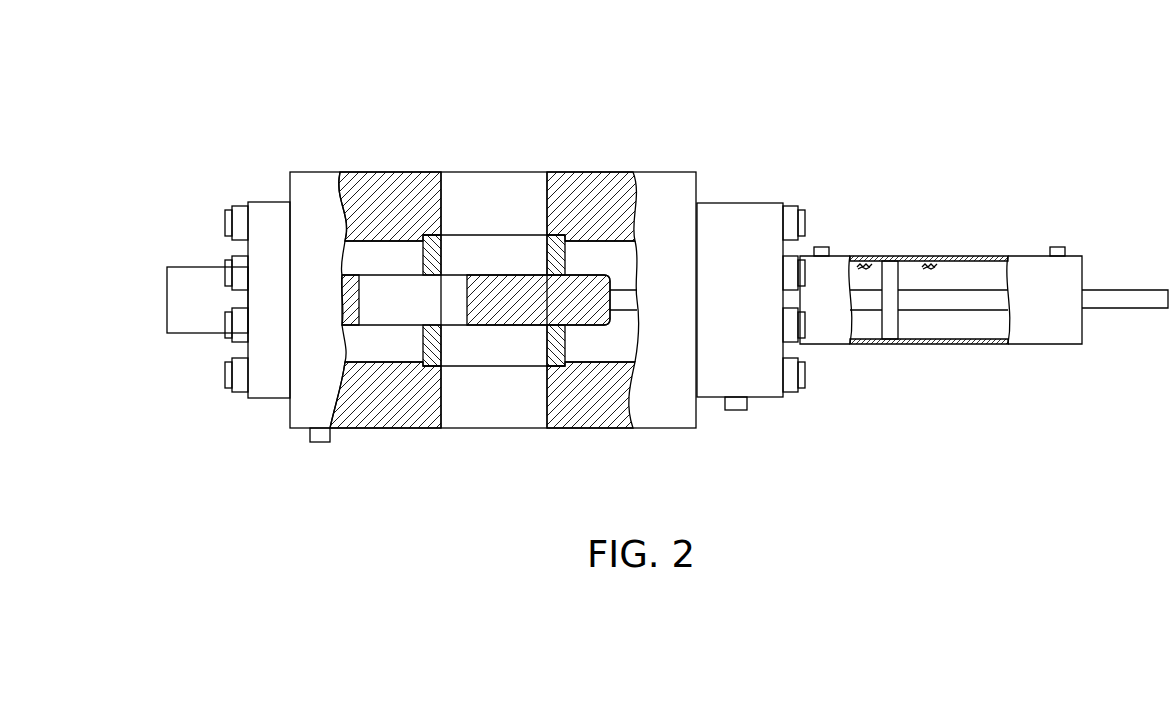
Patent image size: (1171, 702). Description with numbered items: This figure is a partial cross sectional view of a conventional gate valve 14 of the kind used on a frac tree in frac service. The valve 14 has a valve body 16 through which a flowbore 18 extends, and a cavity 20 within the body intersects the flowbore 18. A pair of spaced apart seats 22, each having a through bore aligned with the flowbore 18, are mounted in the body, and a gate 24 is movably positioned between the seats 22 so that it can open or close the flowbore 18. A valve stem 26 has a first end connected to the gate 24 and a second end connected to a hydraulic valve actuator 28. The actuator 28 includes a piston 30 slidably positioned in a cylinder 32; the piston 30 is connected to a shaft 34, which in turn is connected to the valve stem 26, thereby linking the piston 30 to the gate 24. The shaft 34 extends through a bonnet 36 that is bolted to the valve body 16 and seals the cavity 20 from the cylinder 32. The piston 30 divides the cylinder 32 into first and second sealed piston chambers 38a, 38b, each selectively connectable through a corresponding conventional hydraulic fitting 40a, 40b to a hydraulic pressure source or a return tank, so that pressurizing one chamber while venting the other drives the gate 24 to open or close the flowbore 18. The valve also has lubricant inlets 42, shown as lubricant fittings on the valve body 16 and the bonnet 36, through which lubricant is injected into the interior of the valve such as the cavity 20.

The flow control valve 14 is at (278, 105).
The valve body 16 is at (657, 172).
The flowbore 18 is at (546, 200).
The cavity 20 is at (372, 252).
The seats 22 is at (442, 253).
The gate 24 is at (523, 327).
The valve stem 26 is at (625, 313).
The hydraulic valve actuator 28 is at (993, 257).
The piston 30 is at (893, 322).
The cylinder 32 is at (1030, 346).
The shaft 34 is at (953, 311).
The bonnet 36 is at (733, 203).
The first sealed piston chamber 38a is at (927, 262).
The second sealed piston chamber 38b is at (868, 262).
The hydraulic fitting 40a is at (1057, 247).
The hydraulic fitting 40b is at (823, 247).
The lubricant inlet 42 is at (320, 443).